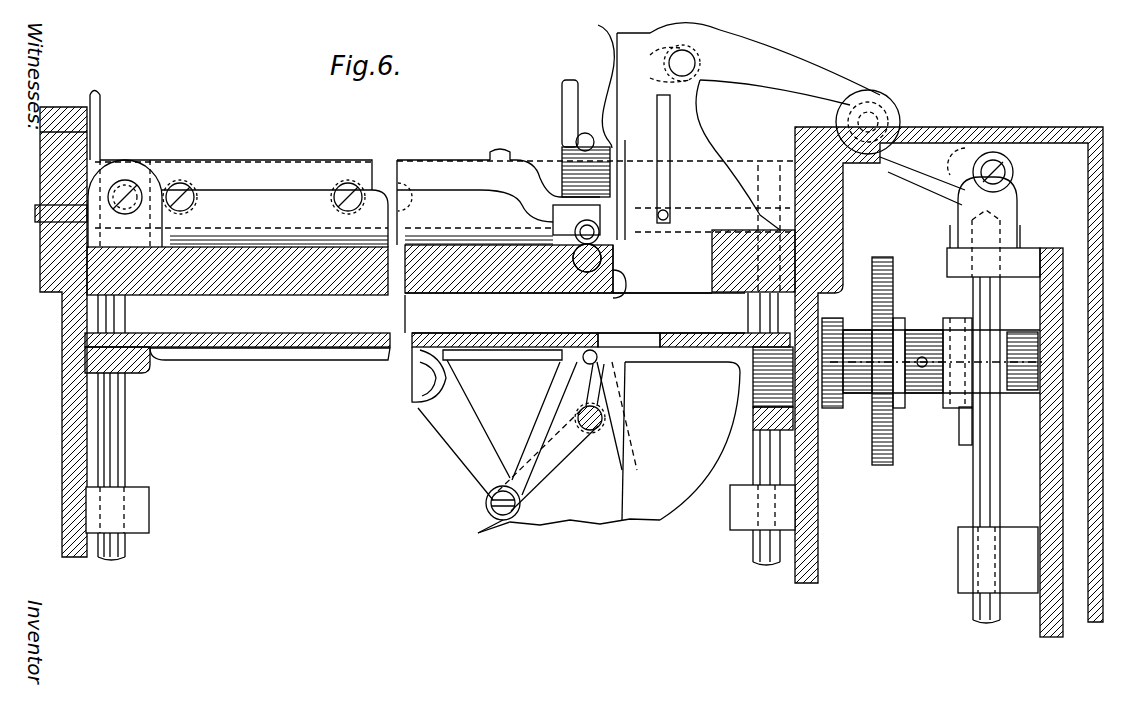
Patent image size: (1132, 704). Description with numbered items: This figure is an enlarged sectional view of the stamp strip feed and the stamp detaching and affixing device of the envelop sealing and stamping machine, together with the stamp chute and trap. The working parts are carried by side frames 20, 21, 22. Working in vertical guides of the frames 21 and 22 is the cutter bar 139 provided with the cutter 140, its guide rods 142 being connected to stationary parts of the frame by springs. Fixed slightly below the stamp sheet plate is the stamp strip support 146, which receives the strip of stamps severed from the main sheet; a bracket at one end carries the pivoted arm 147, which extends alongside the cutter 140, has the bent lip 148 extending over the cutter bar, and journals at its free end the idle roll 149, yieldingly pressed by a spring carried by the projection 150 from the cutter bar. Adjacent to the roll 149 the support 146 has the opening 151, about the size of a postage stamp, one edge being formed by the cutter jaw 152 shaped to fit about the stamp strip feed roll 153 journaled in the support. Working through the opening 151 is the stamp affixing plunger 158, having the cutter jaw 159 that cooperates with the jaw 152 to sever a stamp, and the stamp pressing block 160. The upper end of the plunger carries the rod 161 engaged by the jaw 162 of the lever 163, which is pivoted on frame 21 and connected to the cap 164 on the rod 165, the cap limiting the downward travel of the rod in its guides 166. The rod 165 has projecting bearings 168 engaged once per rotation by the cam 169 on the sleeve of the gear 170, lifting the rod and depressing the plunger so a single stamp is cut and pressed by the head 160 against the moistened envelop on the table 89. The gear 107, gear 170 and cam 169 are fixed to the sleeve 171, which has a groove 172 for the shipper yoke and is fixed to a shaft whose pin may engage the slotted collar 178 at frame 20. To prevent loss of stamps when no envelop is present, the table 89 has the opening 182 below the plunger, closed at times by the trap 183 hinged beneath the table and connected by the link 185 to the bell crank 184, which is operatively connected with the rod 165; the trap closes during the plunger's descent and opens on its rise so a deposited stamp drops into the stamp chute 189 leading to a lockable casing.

The side frame 20 is at (1046, 638).
The side frame 21 is at (818, 572).
The side frame 22 is at (62, 523).
The table 89 is at (478, 333).
The gear 107 is at (833, 410).
The cutter bar 139 is at (101, 160).
The cutter 140 is at (275, 200).
The guide rod 142 is at (125, 443).
The stamp strip support 146 is at (134, 172).
The arm 147 is at (330, 160).
The bent lip 148 is at (501, 150).
The idle roll 149 is at (560, 228).
The projection 150 is at (562, 176).
The opening 151 is at (663, 290).
The cutter jaw 152 is at (620, 296).
The stamp strip feed roll 153 is at (578, 273).
The stamp affixing plunger 158 is at (700, 108).
The cutter jaw 159 is at (622, 187).
The stamp pressing block 160 is at (665, 236).
The rod 161 is at (712, 62).
The jaw 162 is at (688, 52).
The lever 163 is at (913, 122).
The cap 164 is at (1018, 206).
The rod 165 is at (986, 621).
The guide 166 is at (1030, 254).
The projecting bearing 168 is at (965, 335).
The cam 169 is at (962, 440).
The gear 170 is at (881, 466).
The sleeve 171 is at (853, 328).
The groove 172 is at (900, 316).
The collar 178 is at (1019, 332).
The opening 182 is at (638, 348).
The trap 183 is at (623, 460).
The bell crank 184 is at (447, 400).
The link 185 is at (545, 463).
The stamp chute 189 is at (668, 521).